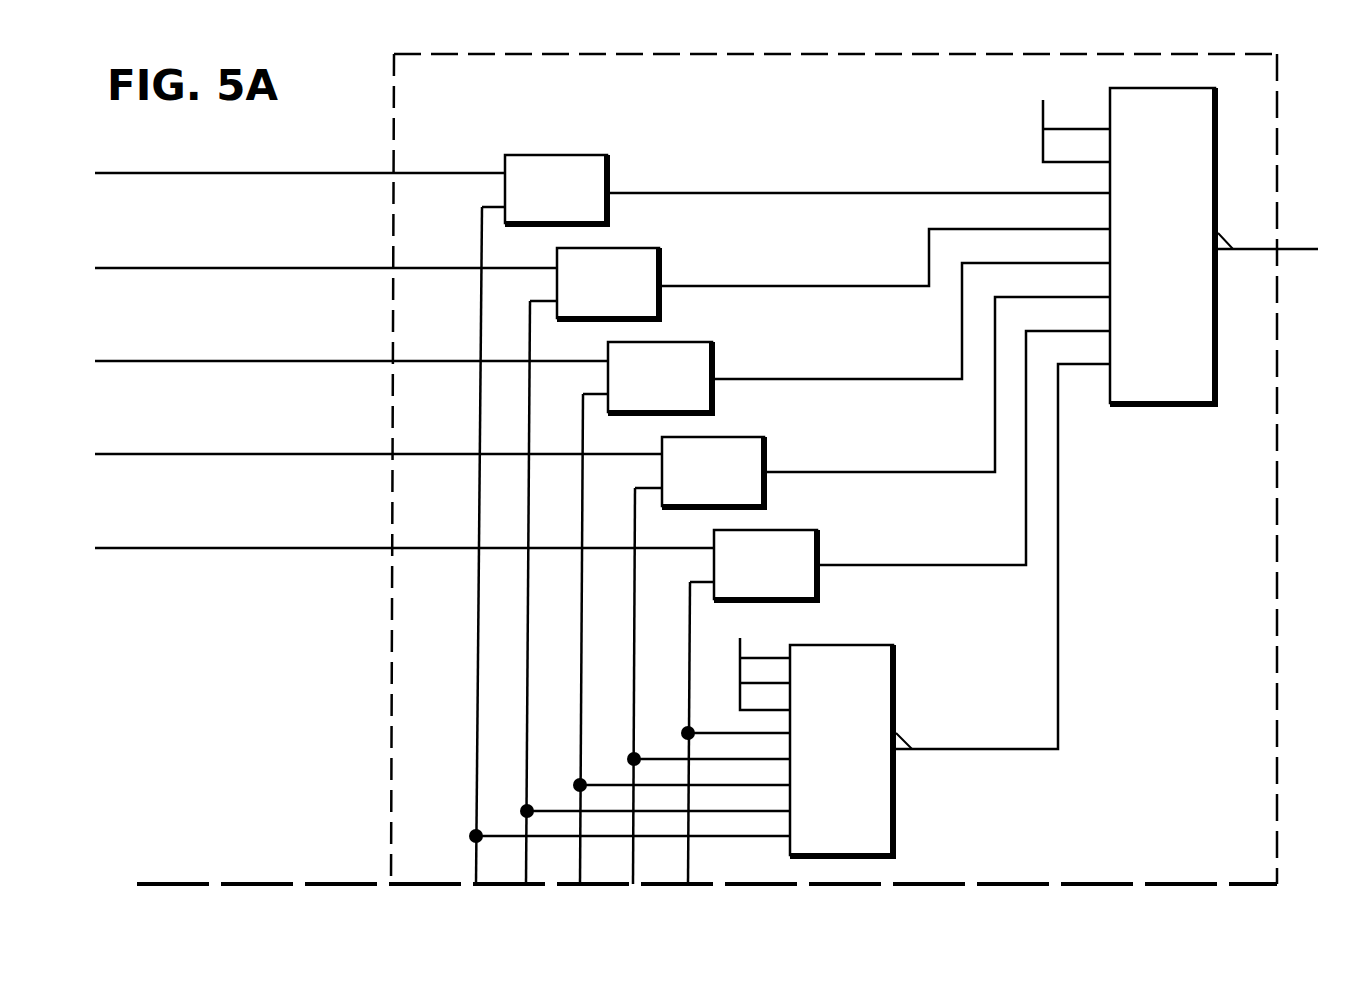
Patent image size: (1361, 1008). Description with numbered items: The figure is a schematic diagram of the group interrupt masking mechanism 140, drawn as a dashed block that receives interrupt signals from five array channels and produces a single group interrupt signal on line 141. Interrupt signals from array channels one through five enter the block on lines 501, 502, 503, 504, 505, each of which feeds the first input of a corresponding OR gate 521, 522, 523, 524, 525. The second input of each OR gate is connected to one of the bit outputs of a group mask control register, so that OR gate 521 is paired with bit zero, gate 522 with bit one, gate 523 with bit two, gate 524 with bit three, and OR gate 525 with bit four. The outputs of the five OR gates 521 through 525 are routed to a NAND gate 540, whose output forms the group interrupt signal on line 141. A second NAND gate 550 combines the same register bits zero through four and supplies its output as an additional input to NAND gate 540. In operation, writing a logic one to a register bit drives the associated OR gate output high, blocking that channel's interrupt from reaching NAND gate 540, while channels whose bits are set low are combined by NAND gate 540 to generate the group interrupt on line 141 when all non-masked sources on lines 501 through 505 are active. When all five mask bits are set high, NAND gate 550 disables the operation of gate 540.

The group interrupt masking mechanism 140 is at (390, 626).
The line 141 is at (1248, 249).
The line 501 is at (410, 173).
The line 502 is at (405, 268).
The line 503 is at (398, 361).
The line 504 is at (398, 454).
The line 505 is at (398, 548).
The OR gate 521 is at (608, 155).
The OR gate 522 is at (660, 248).
The OR gate 523 is at (713, 342).
The OR gate 524 is at (765, 437).
The OR gate 525 is at (818, 530).
The NAND gate 540 is at (1148, 406).
The second NAND gate 550 is at (895, 645).